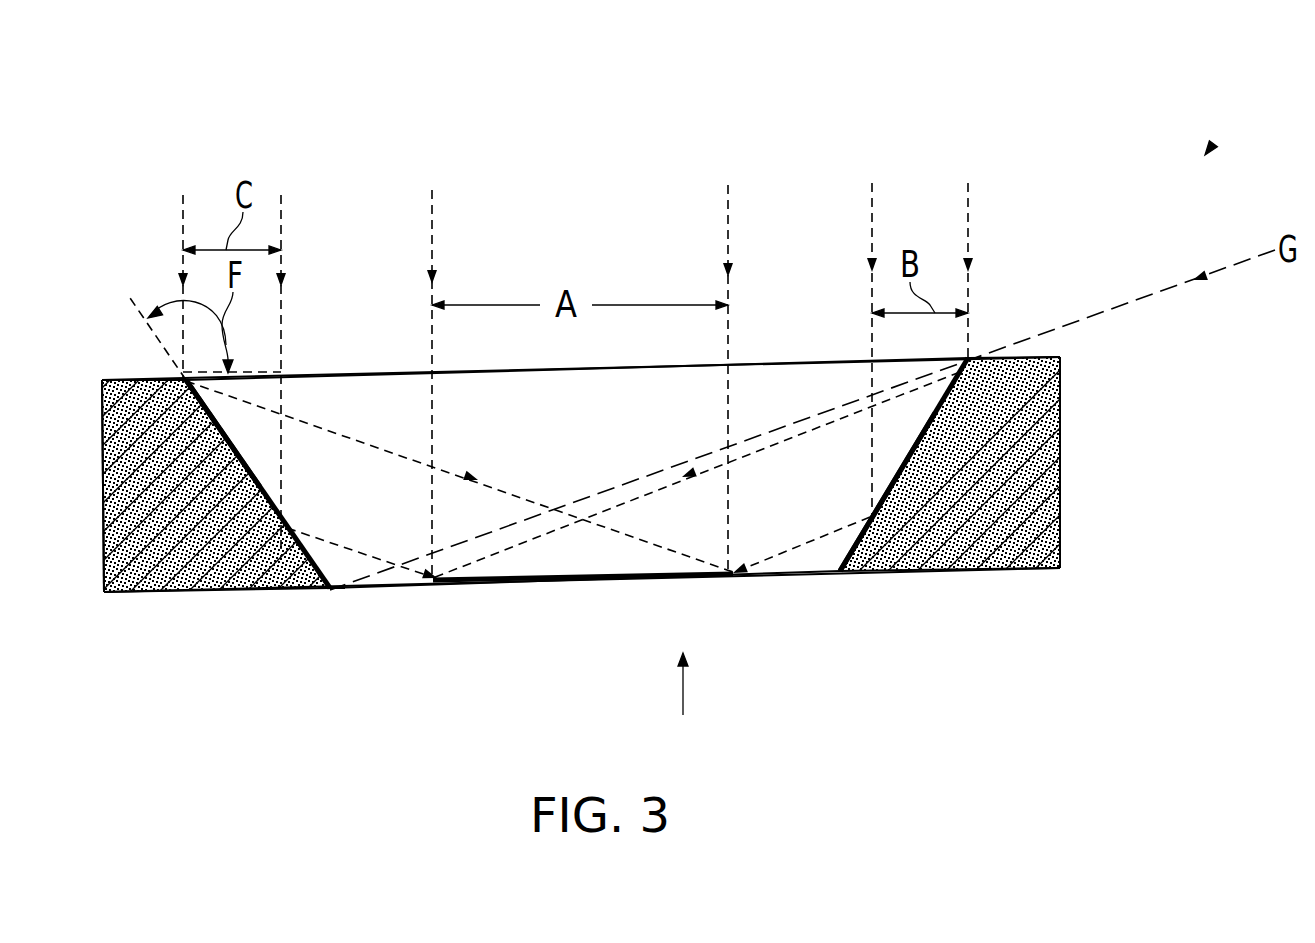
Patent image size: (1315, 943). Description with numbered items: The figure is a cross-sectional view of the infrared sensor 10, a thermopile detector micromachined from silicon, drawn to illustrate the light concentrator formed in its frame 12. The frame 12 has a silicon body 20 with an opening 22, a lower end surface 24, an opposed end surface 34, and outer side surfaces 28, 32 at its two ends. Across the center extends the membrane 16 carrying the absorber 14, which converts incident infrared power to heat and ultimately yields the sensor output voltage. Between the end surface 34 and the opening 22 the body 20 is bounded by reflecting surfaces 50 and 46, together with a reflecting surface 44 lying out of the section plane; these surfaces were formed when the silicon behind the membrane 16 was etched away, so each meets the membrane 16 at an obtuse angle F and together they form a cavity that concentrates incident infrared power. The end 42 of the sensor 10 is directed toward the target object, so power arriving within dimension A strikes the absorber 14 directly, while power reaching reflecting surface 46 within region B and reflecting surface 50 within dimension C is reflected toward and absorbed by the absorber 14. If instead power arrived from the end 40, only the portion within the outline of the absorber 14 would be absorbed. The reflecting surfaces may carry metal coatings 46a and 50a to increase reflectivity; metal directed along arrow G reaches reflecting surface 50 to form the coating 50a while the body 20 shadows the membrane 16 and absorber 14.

The infrared sensor 10 is at (1208, 151).
The frame 12 is at (1072, 490).
The absorber 14 is at (558, 594).
The membrane 16 is at (788, 591).
The body 20 is at (1035, 422).
The opening 22 is at (332, 585).
The end surface 24 is at (125, 593).
The outer side surface 28 is at (1058, 522).
The outer side surface 32 is at (102, 448).
The opposed end surface 34 is at (137, 381).
The end 40 is at (685, 700).
The end 42 is at (562, 190).
The reflecting surface 44 is at (640, 378).
The reflecting surface 46 is at (952, 378).
The metal coating 46a is at (918, 440).
The reflecting surface 50 is at (250, 468).
The metal coating 50a is at (242, 445).